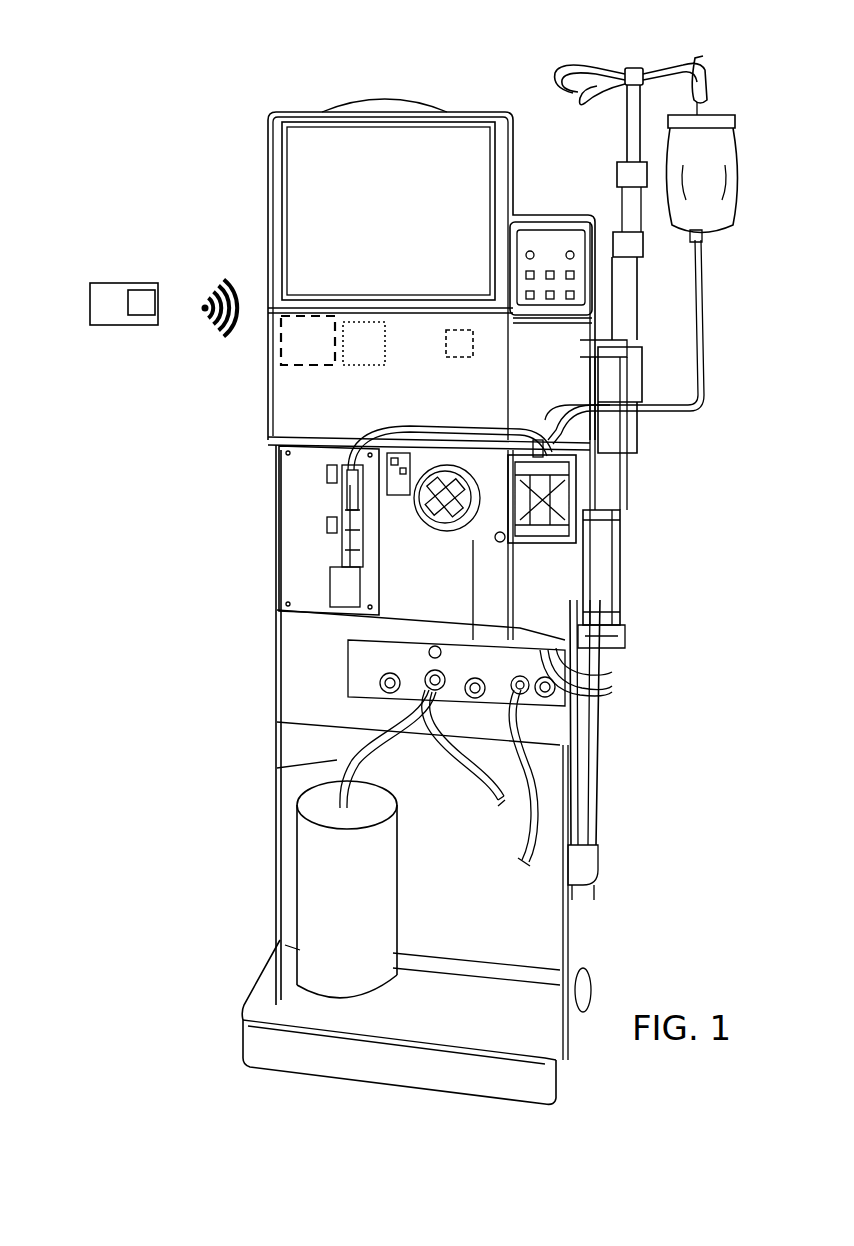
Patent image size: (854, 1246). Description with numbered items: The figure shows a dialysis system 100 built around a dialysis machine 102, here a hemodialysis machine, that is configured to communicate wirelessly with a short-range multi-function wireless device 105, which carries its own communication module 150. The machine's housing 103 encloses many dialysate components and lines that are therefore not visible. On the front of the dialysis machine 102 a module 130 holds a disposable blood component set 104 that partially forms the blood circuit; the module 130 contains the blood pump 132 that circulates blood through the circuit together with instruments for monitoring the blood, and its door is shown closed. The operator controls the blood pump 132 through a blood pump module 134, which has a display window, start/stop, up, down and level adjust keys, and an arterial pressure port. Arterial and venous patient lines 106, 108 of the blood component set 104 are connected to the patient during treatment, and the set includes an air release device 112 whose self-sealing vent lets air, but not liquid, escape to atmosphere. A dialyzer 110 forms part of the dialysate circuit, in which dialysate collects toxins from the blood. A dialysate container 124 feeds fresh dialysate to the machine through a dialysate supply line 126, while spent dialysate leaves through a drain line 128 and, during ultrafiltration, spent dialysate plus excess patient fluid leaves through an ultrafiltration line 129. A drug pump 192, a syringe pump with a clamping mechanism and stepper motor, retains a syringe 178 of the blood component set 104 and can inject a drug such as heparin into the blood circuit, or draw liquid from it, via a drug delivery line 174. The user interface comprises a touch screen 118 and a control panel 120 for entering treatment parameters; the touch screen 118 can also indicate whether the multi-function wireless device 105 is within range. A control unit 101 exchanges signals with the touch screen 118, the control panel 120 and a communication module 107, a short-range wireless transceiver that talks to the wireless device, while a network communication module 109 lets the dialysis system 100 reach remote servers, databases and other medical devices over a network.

The dialysis system 100 is at (198, 150).
The control unit 101 is at (458, 358).
The dialysis machine 102 is at (258, 470).
The housing 103 is at (268, 412).
The blood component set 104 is at (660, 538).
The multi-function wireless device 105 is at (88, 283).
The arterial patient line 106 is at (592, 737).
The communication module 107 is at (375, 322).
The venous patient line 108 is at (612, 695).
The network communication module 109 is at (303, 318).
The dialyzer 110 is at (610, 623).
The air release device 112 is at (598, 530).
The touch screen 118 is at (492, 130).
The control panel 120 is at (540, 243).
The dialysate container 124 is at (307, 898).
The dialysate supply line 126 is at (350, 767).
The drain line 128 is at (460, 777).
The ultrafiltration line 129 is at (520, 837).
The module 130 is at (607, 437).
The blood pump 132 is at (430, 537).
The blood pump module 134 is at (390, 497).
The communication module 150 is at (145, 315).
The drug delivery line 174 is at (375, 420).
The syringe 178 is at (330, 539).
The drug pump 192 is at (305, 486).